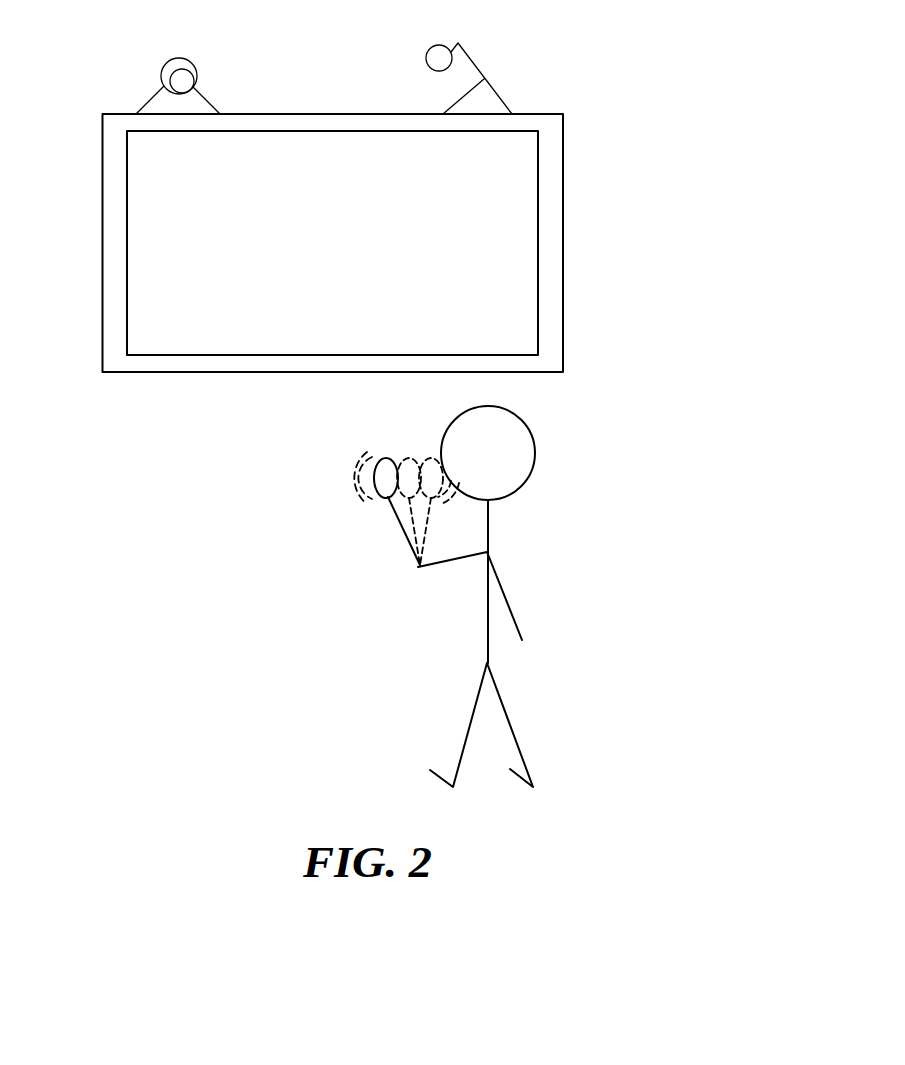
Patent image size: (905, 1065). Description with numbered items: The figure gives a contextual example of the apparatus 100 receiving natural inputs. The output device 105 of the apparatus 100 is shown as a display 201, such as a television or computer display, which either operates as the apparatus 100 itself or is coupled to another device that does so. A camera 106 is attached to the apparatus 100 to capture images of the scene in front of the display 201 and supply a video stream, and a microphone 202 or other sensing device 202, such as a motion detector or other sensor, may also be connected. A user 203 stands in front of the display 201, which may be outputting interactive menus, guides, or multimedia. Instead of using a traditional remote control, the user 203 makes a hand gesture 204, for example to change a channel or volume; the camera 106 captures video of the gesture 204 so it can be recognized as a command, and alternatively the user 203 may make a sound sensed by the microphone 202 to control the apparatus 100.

The apparatus 100 is at (315, 264).
The output device 105 is at (563, 315).
The camera 106 is at (152, 91).
The display 201 is at (517, 228).
The microphone 202 is at (500, 98).
The user 203 is at (515, 737).
The hand gesture 204 is at (377, 536).